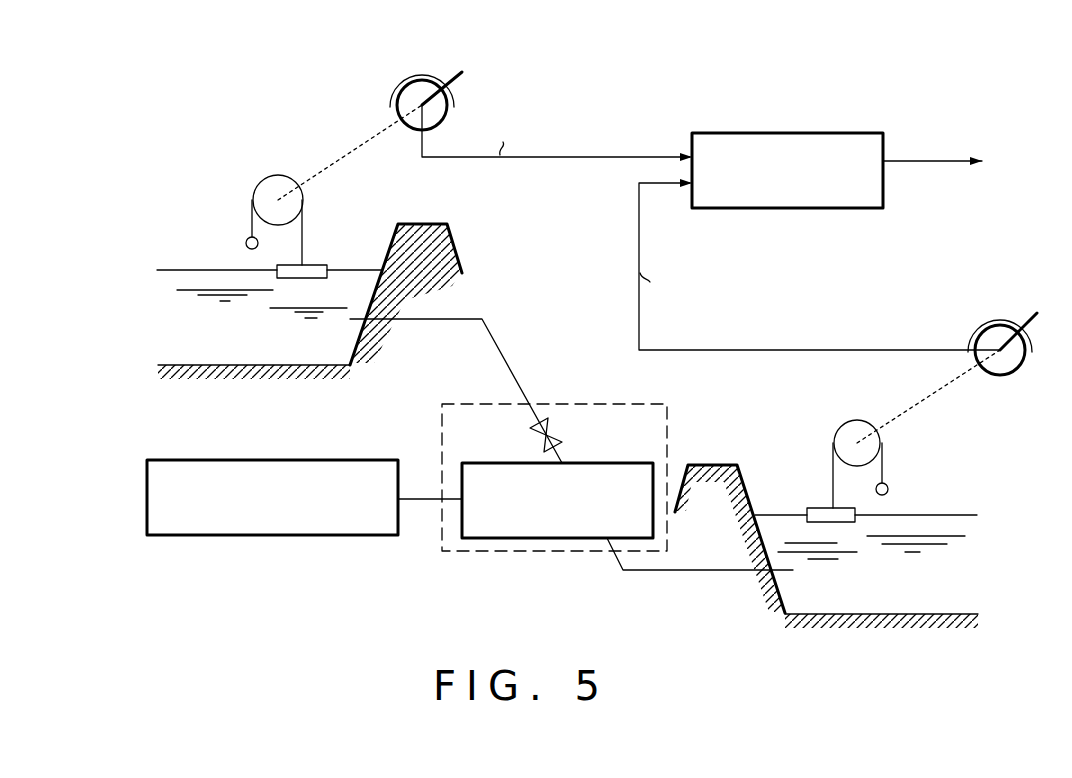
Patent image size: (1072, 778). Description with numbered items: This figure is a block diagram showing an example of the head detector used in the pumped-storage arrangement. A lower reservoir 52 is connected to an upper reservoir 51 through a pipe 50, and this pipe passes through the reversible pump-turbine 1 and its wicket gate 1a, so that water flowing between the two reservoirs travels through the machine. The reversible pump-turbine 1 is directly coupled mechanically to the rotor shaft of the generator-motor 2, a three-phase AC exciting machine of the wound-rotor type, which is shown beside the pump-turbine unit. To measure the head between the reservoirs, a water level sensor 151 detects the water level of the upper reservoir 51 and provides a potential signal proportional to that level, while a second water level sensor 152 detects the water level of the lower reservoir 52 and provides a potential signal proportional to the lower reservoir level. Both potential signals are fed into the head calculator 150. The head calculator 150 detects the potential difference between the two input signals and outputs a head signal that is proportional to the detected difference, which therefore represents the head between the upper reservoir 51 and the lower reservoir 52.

The reversible pump-turbine 1 is at (605, 402).
The wicket gate 1a is at (552, 432).
The generator-motor 2 is at (272, 535).
The pipe 50 is at (508, 363).
The upper reservoir 51 is at (201, 345).
The lower reservoir 52 is at (848, 591).
The head calculator 150 is at (793, 133).
The water level sensor 151 is at (410, 68).
The water level sensor 152 is at (822, 420).